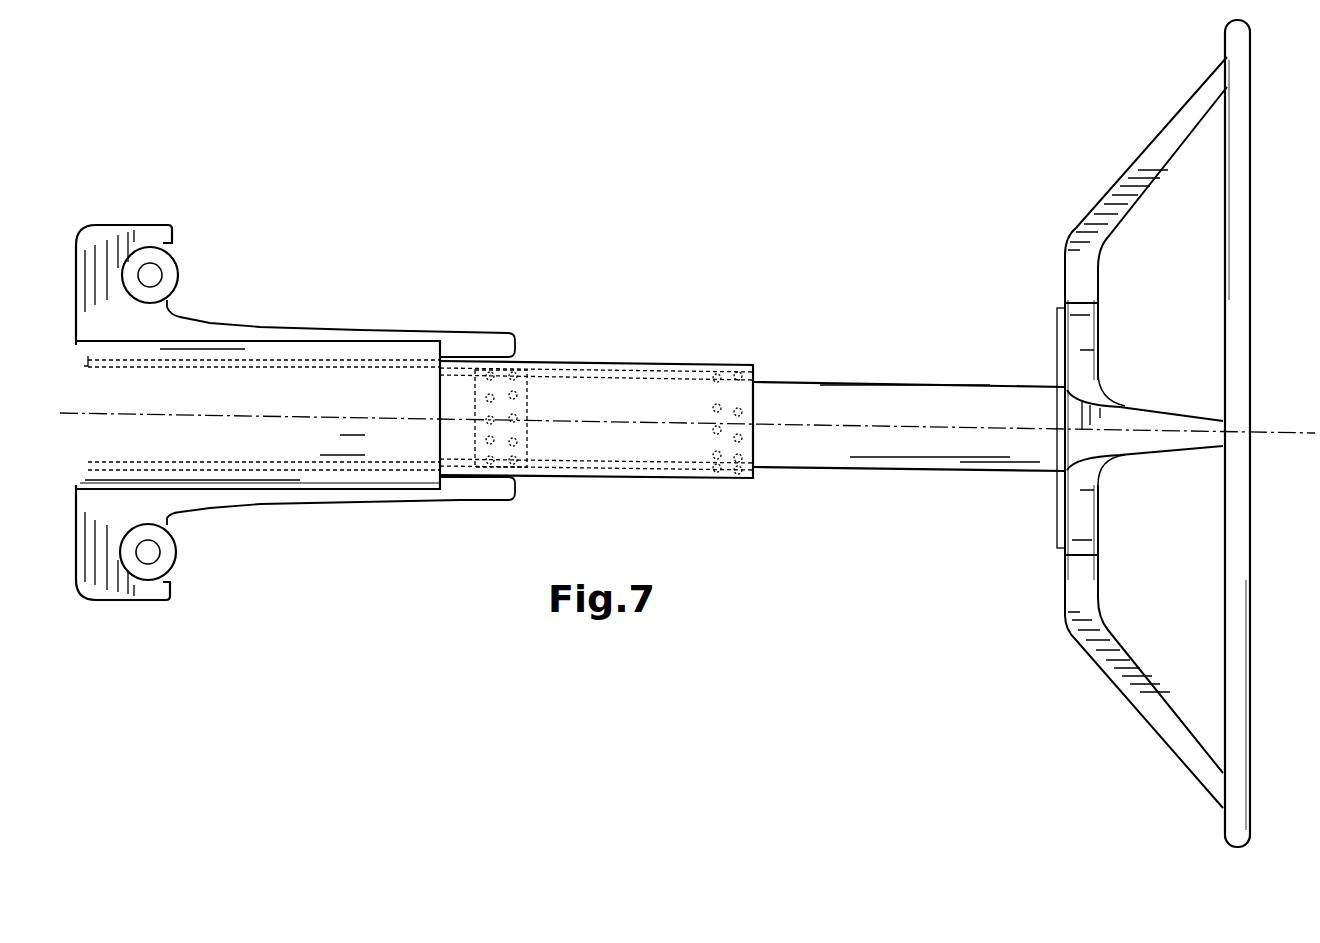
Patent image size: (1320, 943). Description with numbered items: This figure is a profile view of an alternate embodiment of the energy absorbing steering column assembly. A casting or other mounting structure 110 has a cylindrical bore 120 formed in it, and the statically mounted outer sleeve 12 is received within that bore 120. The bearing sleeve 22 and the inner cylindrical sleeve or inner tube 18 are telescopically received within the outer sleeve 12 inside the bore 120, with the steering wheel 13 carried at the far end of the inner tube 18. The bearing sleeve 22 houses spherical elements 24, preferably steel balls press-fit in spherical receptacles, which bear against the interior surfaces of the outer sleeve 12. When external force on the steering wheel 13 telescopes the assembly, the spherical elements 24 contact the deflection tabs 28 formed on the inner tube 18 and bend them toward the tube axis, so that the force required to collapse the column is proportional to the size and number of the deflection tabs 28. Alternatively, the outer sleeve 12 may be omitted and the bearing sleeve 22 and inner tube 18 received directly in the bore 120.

The mounting structure 110 is at (128, 600).
The cylindrical bore 120 is at (292, 488).
The outer sleeve 12 is at (392, 445).
The bearing sleeve 22 is at (597, 440).
The deflection tabs 28 is at (477, 428).
The spherical elements 24 is at (713, 433).
The inner tube 18 is at (885, 440).
The steering wheel 13 is at (1237, 623).